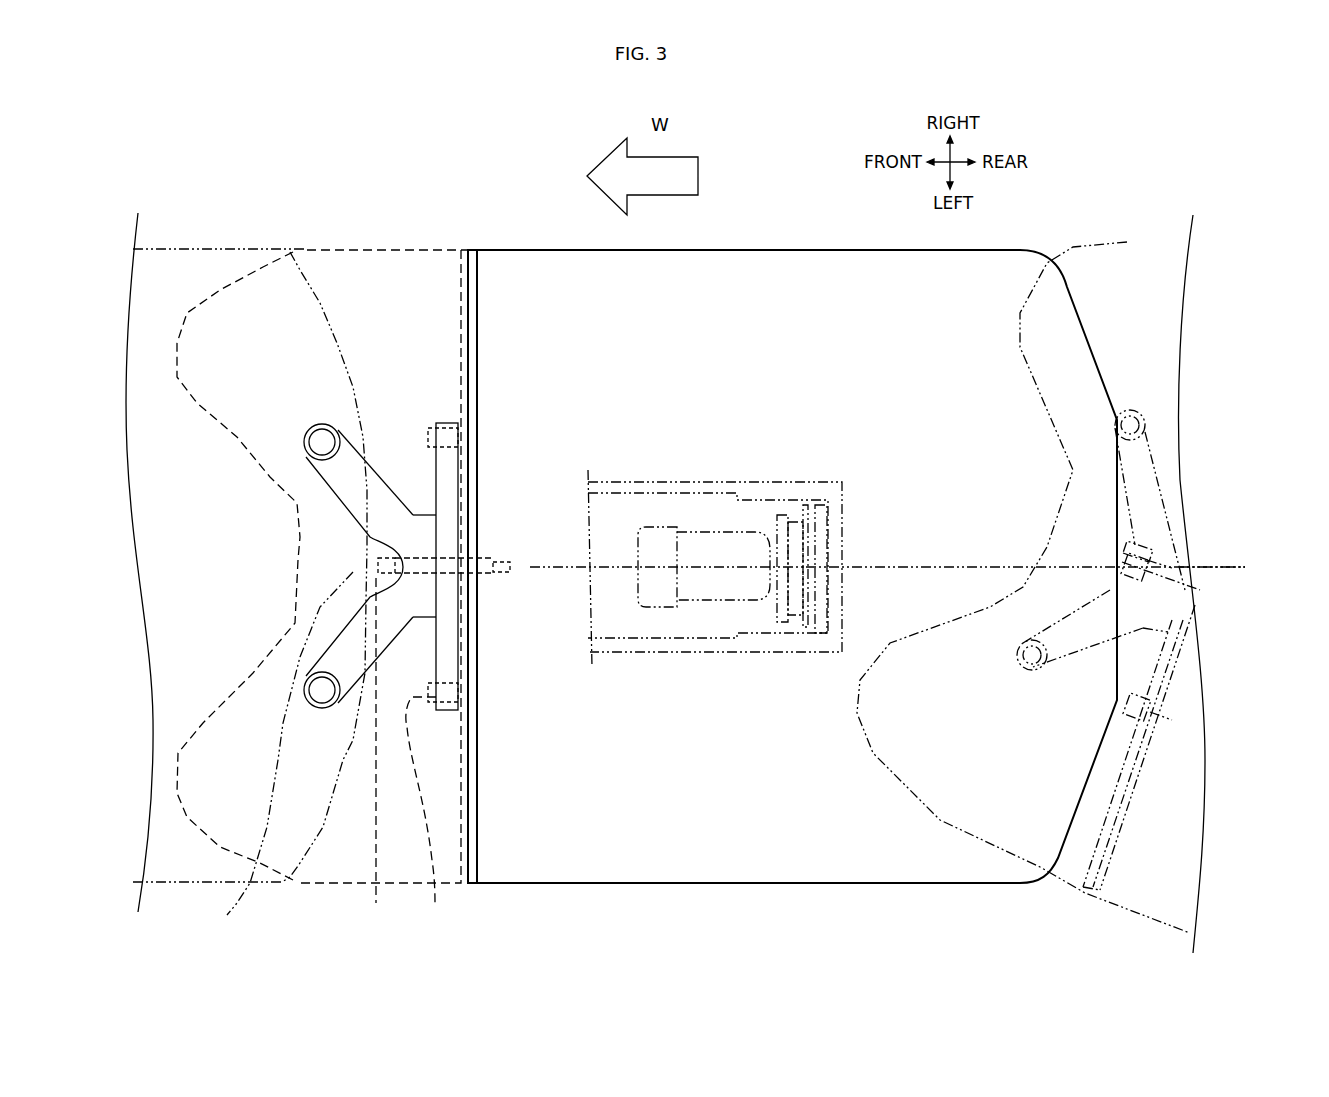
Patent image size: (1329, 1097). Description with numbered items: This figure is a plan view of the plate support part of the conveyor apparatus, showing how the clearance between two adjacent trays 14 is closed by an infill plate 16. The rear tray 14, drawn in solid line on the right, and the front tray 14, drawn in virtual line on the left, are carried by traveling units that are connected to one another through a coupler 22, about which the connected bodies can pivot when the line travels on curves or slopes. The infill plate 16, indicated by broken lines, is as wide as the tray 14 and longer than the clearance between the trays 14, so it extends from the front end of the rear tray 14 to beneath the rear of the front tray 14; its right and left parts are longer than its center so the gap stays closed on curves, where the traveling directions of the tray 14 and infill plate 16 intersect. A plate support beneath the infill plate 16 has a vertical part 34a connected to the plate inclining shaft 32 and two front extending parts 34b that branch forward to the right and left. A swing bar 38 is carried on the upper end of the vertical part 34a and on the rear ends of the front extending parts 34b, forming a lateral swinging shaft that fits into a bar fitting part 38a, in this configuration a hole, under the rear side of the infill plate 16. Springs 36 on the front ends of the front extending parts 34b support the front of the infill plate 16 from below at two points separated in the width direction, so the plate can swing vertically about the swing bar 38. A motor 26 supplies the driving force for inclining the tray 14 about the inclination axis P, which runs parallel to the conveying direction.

The tray 14 is at (197, 247).
The infill plate 16 is at (383, 247).
The coupler 22 is at (275, 748).
The motor 26 is at (703, 553).
The plate inclining shaft 32 is at (378, 563).
The vertical part 34a is at (425, 515).
The front extending parts 34b is at (320, 474).
The springs 36 is at (322, 440).
The swing bar 38 is at (448, 420).
The bar fitting part 38a is at (431, 819).
The inclination axis P is at (1233, 567).